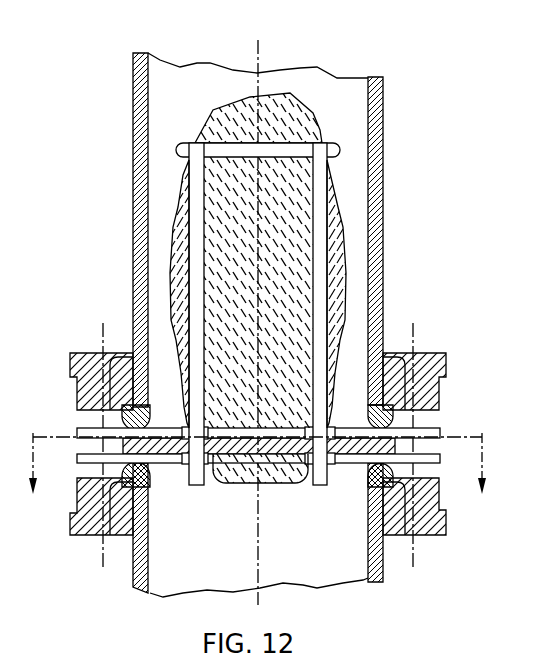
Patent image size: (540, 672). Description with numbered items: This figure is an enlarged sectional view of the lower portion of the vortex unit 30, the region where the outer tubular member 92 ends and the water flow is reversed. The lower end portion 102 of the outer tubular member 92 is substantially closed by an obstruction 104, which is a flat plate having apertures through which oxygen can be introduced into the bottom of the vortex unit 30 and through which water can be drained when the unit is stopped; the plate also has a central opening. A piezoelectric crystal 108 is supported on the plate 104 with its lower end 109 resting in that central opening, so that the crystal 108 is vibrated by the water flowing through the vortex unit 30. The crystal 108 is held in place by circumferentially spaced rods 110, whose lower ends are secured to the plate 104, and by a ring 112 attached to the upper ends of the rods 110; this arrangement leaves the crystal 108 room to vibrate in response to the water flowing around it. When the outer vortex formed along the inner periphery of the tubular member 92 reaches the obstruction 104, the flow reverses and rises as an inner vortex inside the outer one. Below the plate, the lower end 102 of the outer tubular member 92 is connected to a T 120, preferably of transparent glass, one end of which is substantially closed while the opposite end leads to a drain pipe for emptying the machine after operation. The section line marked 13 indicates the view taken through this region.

The section line 13- 13 is at (257, 480).
The vortex unit 30 is at (317, 331).
The outer tubular member 92 is at (382, 132).
The lower end portion of the outer tubular member 102 is at (384, 340).
The obstruction 104 is at (372, 437).
The piezoelectric crystal 108 is at (260, 296).
The lower end of the crystal 109 is at (268, 483).
The rods 110 is at (193, 237).
The ring 112 is at (227, 147).
The T 120 is at (383, 562).